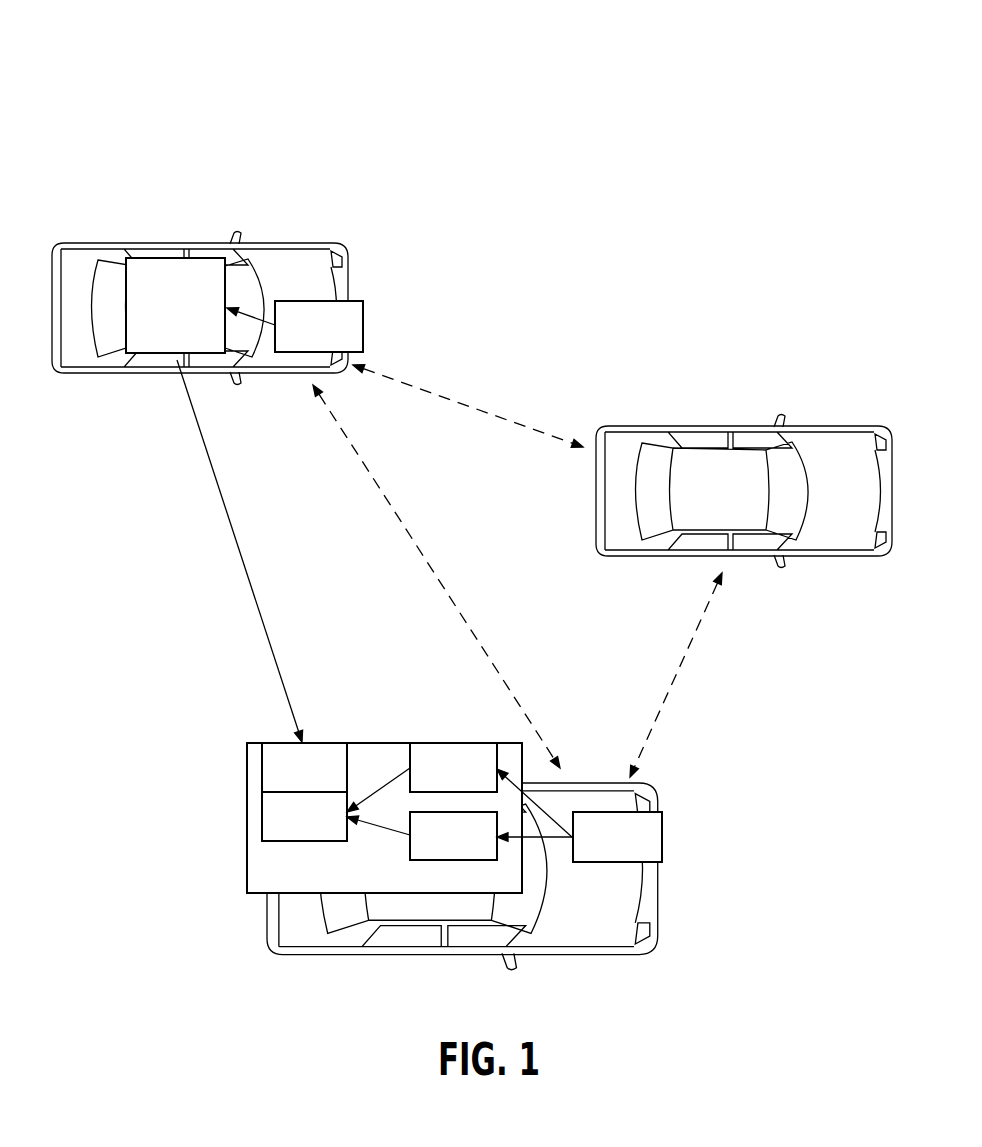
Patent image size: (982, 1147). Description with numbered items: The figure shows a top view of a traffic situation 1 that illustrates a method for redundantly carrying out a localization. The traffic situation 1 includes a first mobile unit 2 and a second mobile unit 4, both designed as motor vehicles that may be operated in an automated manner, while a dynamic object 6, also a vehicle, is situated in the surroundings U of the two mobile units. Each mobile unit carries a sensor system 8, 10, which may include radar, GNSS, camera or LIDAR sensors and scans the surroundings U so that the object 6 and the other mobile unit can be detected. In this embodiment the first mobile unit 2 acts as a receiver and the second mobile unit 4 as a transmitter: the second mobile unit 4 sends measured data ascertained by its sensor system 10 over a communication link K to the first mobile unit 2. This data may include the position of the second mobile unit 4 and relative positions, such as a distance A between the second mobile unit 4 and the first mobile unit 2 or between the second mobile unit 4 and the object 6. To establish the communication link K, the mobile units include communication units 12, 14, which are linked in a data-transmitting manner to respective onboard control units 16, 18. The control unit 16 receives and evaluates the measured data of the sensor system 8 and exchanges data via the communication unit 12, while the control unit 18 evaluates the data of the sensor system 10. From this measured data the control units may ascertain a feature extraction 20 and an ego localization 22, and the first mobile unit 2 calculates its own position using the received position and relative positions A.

The traffic situation 1 is at (160, 117).
The first mobile unit 2 is at (687, 902).
The second mobile unit 4 is at (294, 230).
The dynamic object 6 is at (800, 418).
The sensor system 8 is at (677, 821).
The sensor system 10 is at (388, 307).
The communication unit 12 is at (237, 750).
The communication unit 14 is at (171, 325).
The onboard control unit 16 is at (200, 823).
The onboard control unit 18 is at (117, 393).
The feature extraction 20 is at (448, 712).
The ego localization 22 is at (468, 853).
The communication link K is at (238, 547).
The surroundings U is at (532, 585).
The distance A is at (490, 412).